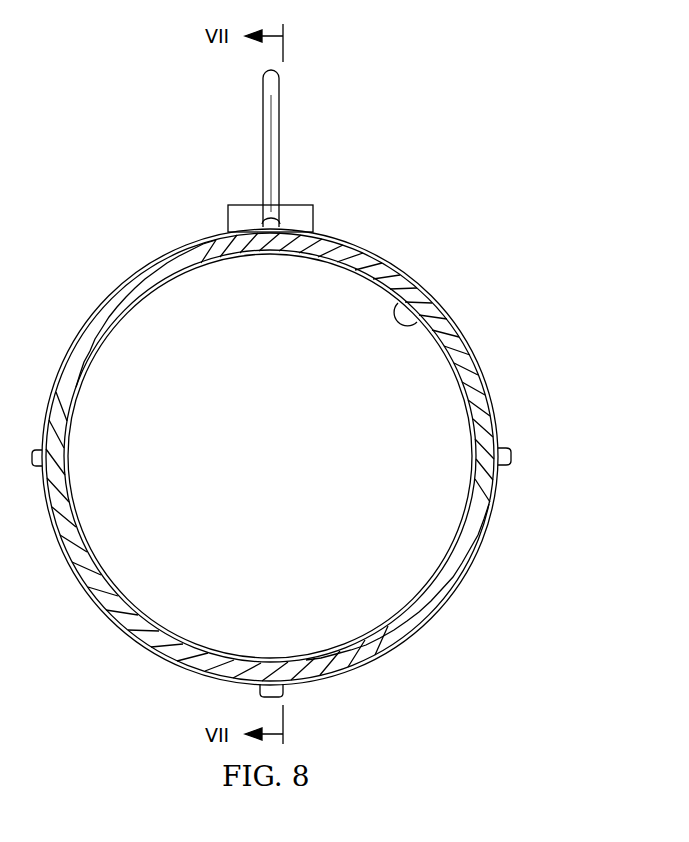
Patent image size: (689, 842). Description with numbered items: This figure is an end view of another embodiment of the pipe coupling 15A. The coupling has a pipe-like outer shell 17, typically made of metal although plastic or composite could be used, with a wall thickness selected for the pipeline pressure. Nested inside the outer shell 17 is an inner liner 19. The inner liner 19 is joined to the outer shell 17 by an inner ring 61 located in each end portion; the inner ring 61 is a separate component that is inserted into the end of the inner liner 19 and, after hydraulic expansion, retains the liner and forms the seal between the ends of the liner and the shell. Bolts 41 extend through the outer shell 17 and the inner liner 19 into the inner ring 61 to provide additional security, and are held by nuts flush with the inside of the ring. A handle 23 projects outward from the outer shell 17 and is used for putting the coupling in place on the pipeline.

The pipe coupling 15A is at (160, 256).
The outer shell 17 is at (362, 240).
The inner liner 19 is at (397, 277).
The handle 23 is at (262, 100).
The bolt 41 is at (512, 455).
The inner ring 61 is at (432, 300).